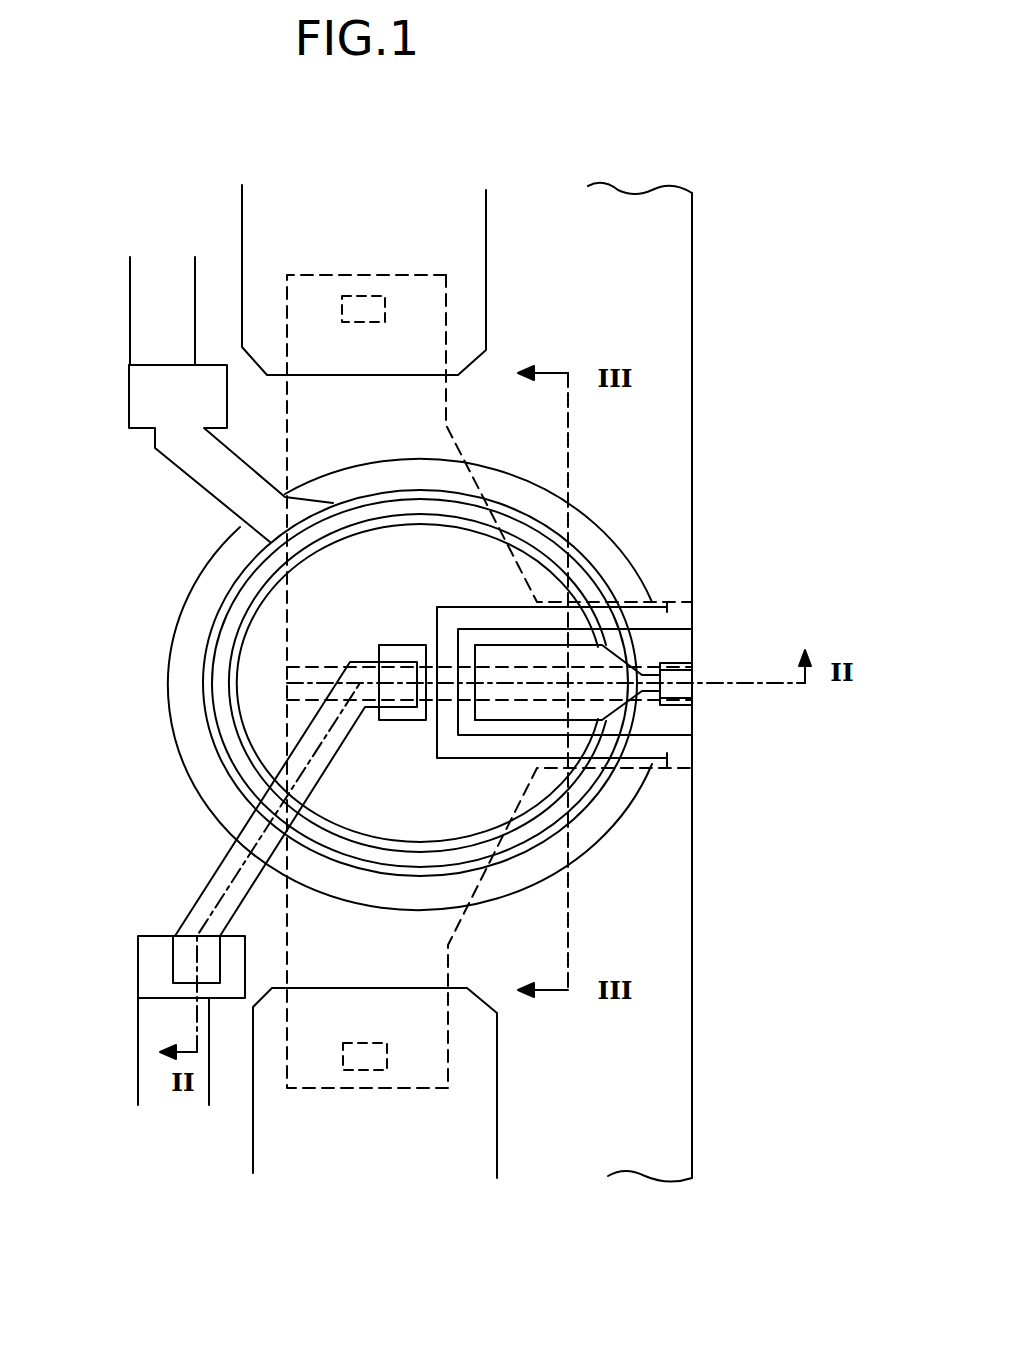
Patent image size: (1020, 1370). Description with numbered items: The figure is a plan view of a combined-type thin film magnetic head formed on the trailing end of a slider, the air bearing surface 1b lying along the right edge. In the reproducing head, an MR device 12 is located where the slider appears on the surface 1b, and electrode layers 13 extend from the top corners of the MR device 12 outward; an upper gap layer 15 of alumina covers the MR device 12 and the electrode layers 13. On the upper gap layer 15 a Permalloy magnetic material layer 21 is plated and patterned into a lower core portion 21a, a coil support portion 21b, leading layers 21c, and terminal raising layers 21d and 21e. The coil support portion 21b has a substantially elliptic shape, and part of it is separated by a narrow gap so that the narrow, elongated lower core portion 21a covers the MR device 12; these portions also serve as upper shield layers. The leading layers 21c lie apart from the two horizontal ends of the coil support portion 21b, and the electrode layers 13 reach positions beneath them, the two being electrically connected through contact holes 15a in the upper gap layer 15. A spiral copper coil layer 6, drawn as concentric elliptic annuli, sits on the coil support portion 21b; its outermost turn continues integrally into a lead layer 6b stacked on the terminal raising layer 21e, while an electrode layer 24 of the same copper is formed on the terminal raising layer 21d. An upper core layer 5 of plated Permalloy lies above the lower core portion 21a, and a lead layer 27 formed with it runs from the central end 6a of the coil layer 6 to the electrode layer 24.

The surface made of ABS 1b is at (692, 510).
The upper core layer 5 is at (510, 710).
The coil layer 6 is at (240, 745).
The central end of the coil layer 6a is at (404, 722).
The lead layer 6b is at (210, 477).
The MR device 12 is at (665, 662).
The electrode layers 13 is at (420, 418).
The upper gap layer 15 is at (668, 322).
The contact holes 15a is at (362, 312).
The magnetic material layer 21 is at (173, 635).
The lower core portion 21a is at (673, 720).
The coil support portion 21b is at (185, 717).
The leading layers 21c is at (433, 230).
The terminal raising layer 21d is at (165, 1032).
The terminal raising layer 21e is at (150, 335).
The electrode layer 24 is at (143, 963).
The lead layer 27 is at (193, 898).